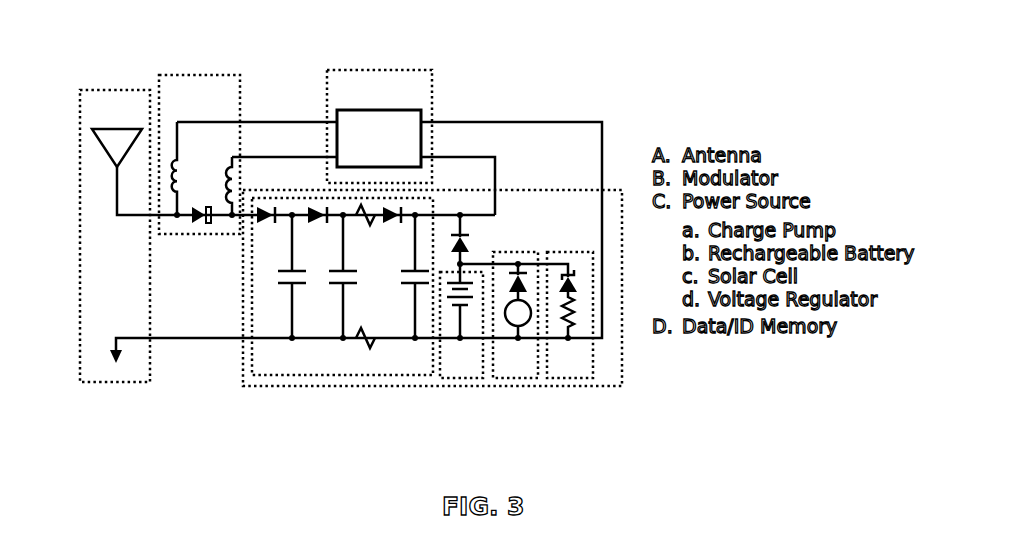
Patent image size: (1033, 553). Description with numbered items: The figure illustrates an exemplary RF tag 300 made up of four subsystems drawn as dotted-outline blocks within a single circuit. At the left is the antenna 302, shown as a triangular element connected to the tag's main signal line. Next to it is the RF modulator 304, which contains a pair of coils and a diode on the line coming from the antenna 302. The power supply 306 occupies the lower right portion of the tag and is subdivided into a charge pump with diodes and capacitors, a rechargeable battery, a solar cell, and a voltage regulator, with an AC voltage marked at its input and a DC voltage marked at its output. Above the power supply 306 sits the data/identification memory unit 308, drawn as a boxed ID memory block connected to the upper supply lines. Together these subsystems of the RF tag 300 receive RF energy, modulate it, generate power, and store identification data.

The RF tag 300 is at (272, 425).
The antenna 302 is at (90, 385).
The RF modulator 304 is at (200, 77).
The power supply 306 is at (623, 362).
The data/identification memory unit 308 is at (430, 72).